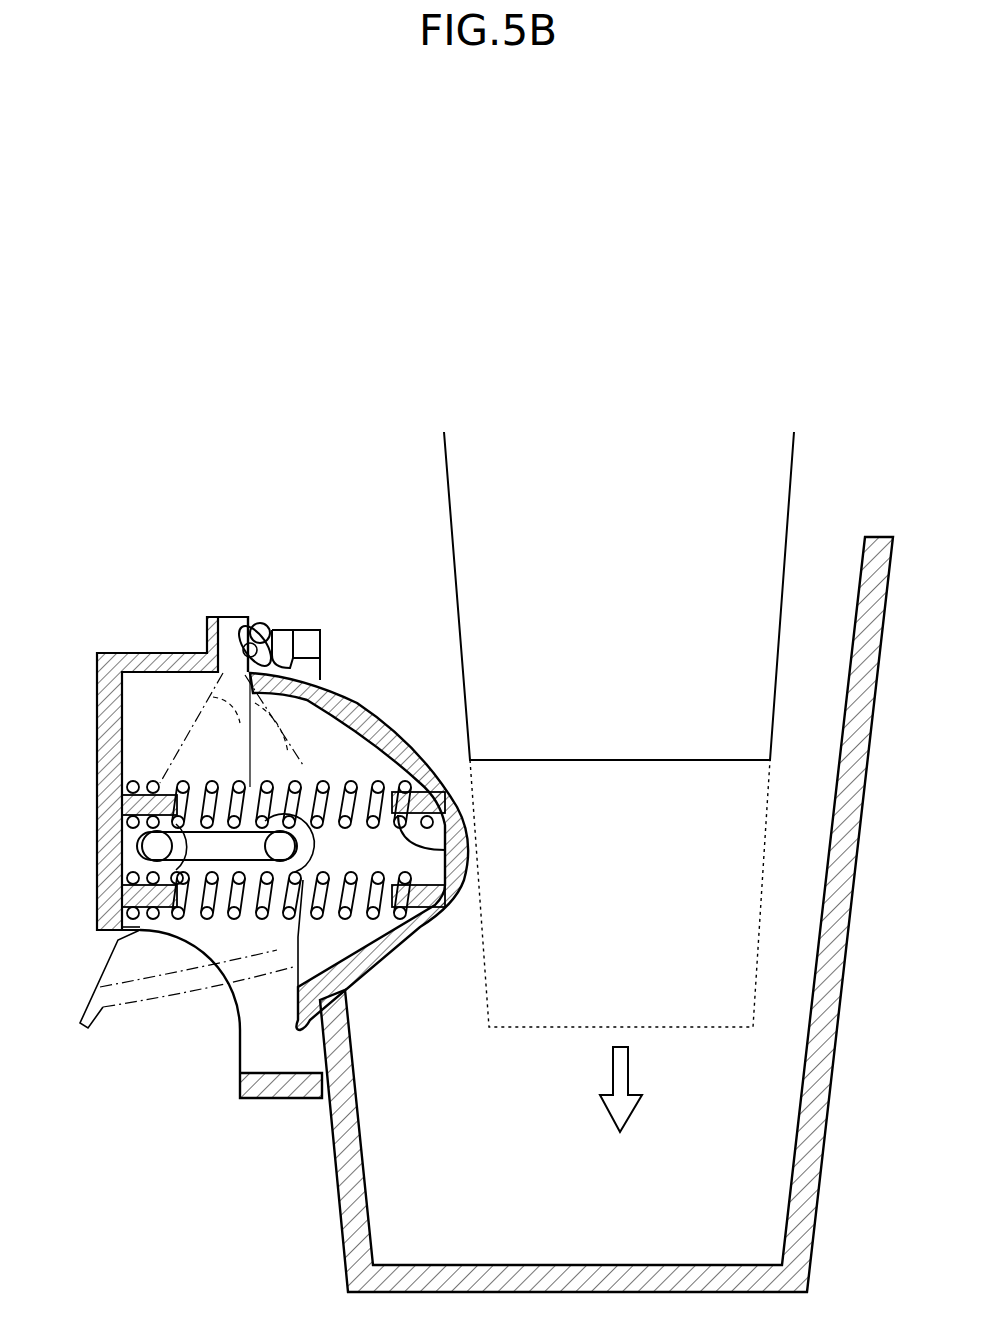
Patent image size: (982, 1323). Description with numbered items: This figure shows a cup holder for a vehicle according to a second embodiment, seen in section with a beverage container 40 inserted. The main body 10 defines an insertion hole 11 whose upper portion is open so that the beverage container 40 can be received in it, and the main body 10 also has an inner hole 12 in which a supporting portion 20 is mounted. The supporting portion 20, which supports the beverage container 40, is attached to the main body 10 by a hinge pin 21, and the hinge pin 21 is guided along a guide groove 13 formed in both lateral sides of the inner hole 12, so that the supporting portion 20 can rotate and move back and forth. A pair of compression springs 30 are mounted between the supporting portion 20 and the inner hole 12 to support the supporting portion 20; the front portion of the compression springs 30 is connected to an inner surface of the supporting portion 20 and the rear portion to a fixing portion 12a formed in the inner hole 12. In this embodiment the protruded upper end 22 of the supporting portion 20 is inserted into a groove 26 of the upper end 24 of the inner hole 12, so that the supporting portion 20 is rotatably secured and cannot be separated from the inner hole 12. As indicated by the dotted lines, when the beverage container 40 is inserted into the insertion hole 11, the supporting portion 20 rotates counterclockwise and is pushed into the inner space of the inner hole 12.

The main body 10 is at (110, 698).
The insertion hole 11 is at (840, 560).
The inner hole 12 is at (160, 745).
The fixing portion 12a is at (128, 786).
The guide groove 13 is at (140, 858).
The supporting portion 20 is at (462, 823).
The hinge pin 21 is at (282, 848).
The upper end of the supporting portion 22 is at (266, 626).
The upper end of the inner hole 24 is at (229, 622).
The groove 26 is at (290, 632).
The compression springs 30 is at (466, 850).
The beverage container 40 is at (623, 758).